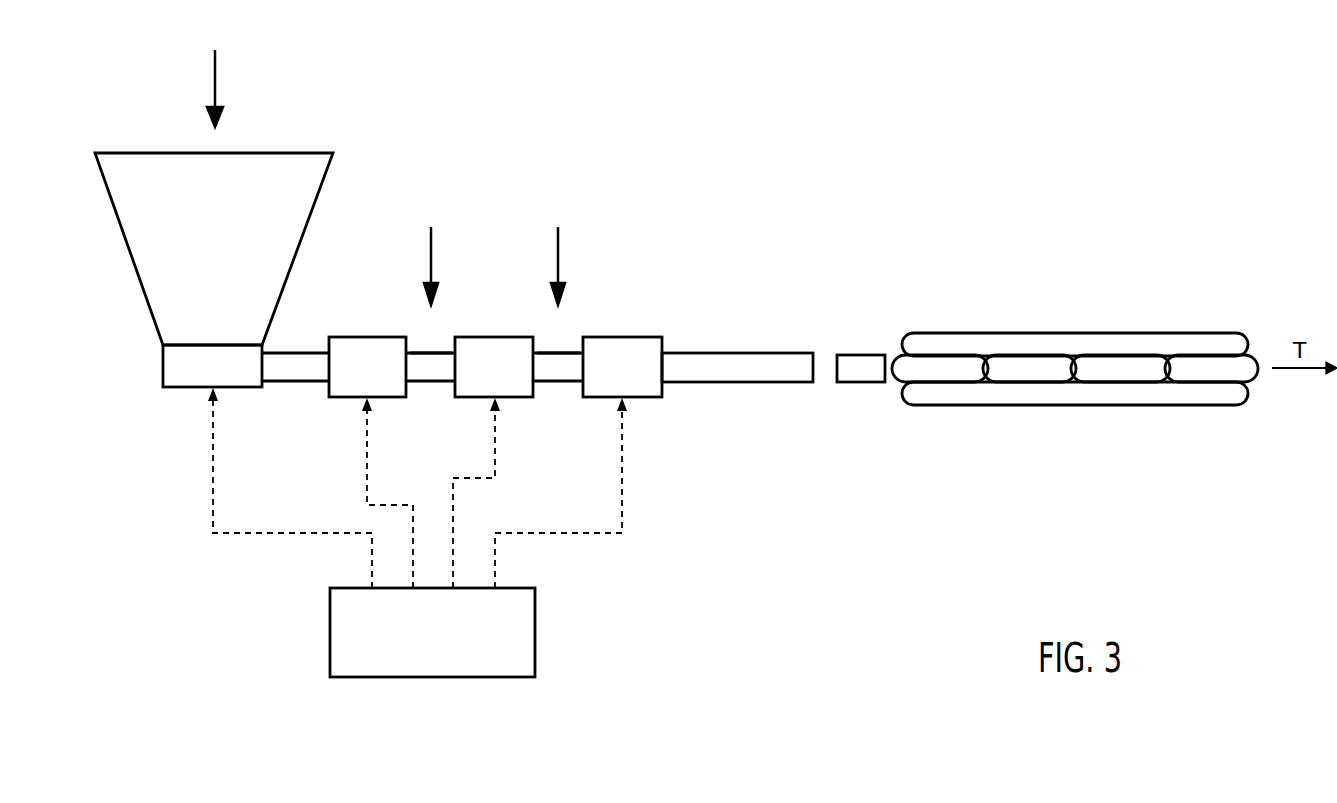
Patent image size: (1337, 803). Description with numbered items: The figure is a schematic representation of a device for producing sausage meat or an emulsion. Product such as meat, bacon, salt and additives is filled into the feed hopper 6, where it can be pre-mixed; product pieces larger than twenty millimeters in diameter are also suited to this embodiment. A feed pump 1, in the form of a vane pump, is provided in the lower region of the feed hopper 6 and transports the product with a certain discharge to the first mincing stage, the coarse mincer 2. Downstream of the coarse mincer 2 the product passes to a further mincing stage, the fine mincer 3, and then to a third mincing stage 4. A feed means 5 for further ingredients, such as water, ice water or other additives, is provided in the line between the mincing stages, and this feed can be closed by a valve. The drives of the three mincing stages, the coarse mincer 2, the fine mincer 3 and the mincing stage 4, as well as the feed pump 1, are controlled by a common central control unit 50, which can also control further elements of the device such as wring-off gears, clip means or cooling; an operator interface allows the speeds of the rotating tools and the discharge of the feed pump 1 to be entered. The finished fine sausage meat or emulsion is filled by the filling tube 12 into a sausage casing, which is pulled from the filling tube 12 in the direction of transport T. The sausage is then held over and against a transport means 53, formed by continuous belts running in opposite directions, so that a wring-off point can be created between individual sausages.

The feed pump 1 is at (181, 391).
The coarse mincer 2 is at (343, 390).
The fine mincer 3 is at (470, 390).
The mincing stage 4 is at (597, 390).
The feed means for further ingredients 5 is at (432, 352).
The feed hopper 6 is at (318, 187).
The filling tube 12 is at (762, 352).
The central control unit 50 is at (343, 668).
The transport means 53 is at (960, 333).